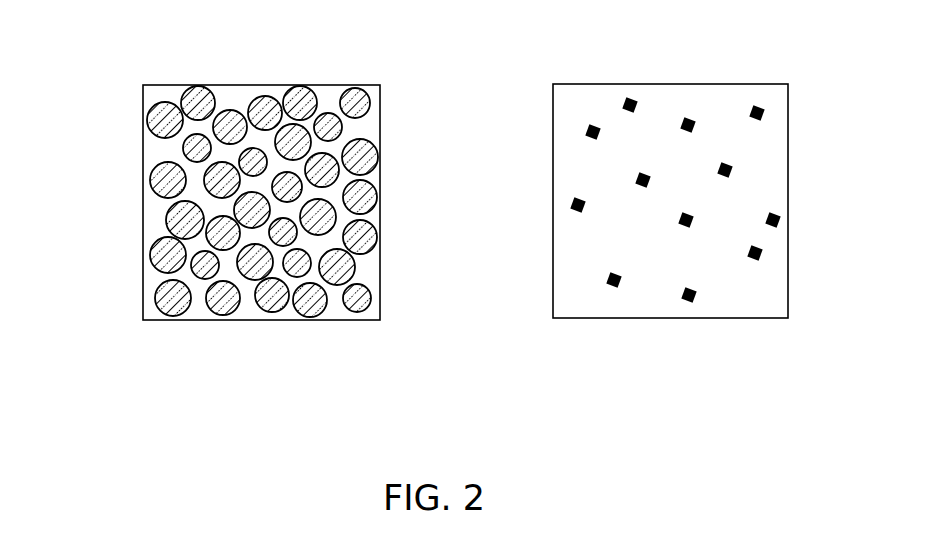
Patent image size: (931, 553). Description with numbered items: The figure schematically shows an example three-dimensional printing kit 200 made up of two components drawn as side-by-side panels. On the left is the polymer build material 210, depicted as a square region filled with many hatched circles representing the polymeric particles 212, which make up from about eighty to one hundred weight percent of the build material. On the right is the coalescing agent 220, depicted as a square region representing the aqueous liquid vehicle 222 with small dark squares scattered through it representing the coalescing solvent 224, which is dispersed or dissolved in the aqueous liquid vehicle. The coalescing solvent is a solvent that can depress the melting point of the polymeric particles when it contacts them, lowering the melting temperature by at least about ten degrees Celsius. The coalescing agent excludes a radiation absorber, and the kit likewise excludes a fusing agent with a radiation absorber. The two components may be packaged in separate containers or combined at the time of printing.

The three-dimensional printing kit 200 is at (141, 43).
The polymer build material 210 is at (297, 235).
The polymeric particles 212 is at (341, 131).
The coalescing agent 220 is at (715, 237).
The aqueous liquid vehicle 222 is at (763, 180).
The coalescing solvent 224 is at (762, 255).